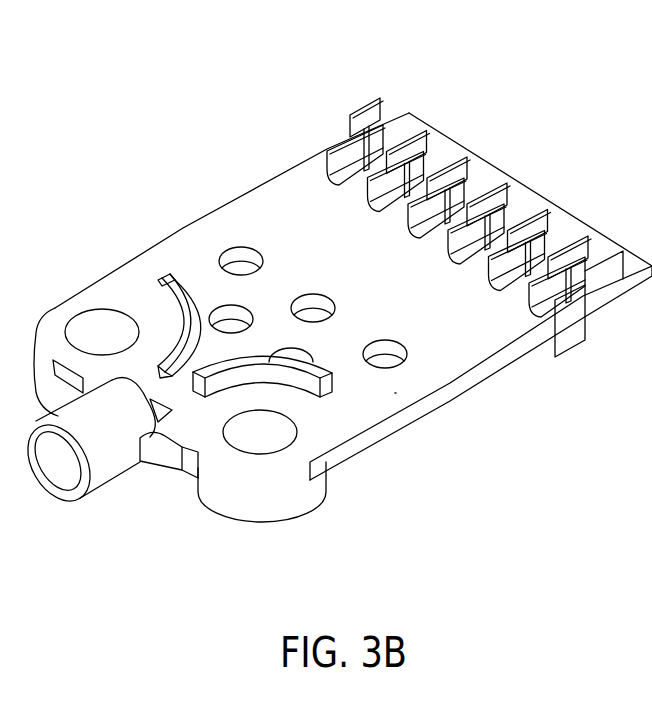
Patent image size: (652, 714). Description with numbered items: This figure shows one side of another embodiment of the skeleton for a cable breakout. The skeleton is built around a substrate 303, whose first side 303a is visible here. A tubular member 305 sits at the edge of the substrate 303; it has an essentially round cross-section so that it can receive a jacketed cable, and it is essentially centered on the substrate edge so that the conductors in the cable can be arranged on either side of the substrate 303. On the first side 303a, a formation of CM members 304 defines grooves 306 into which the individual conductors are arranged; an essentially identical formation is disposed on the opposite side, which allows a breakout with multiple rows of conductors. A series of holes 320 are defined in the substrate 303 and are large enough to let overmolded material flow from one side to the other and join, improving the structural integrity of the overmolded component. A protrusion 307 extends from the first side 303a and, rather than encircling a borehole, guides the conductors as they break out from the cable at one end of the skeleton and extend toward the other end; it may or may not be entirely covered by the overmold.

The substrate 303 is at (247, 223).
The first side of the substrate 303a is at (395, 393).
The CM members 304 is at (450, 171).
The grooves 306 is at (364, 107).
The tubular member 305 is at (105, 467).
The protrusion 307 is at (303, 393).
The holes 320 is at (227, 313).